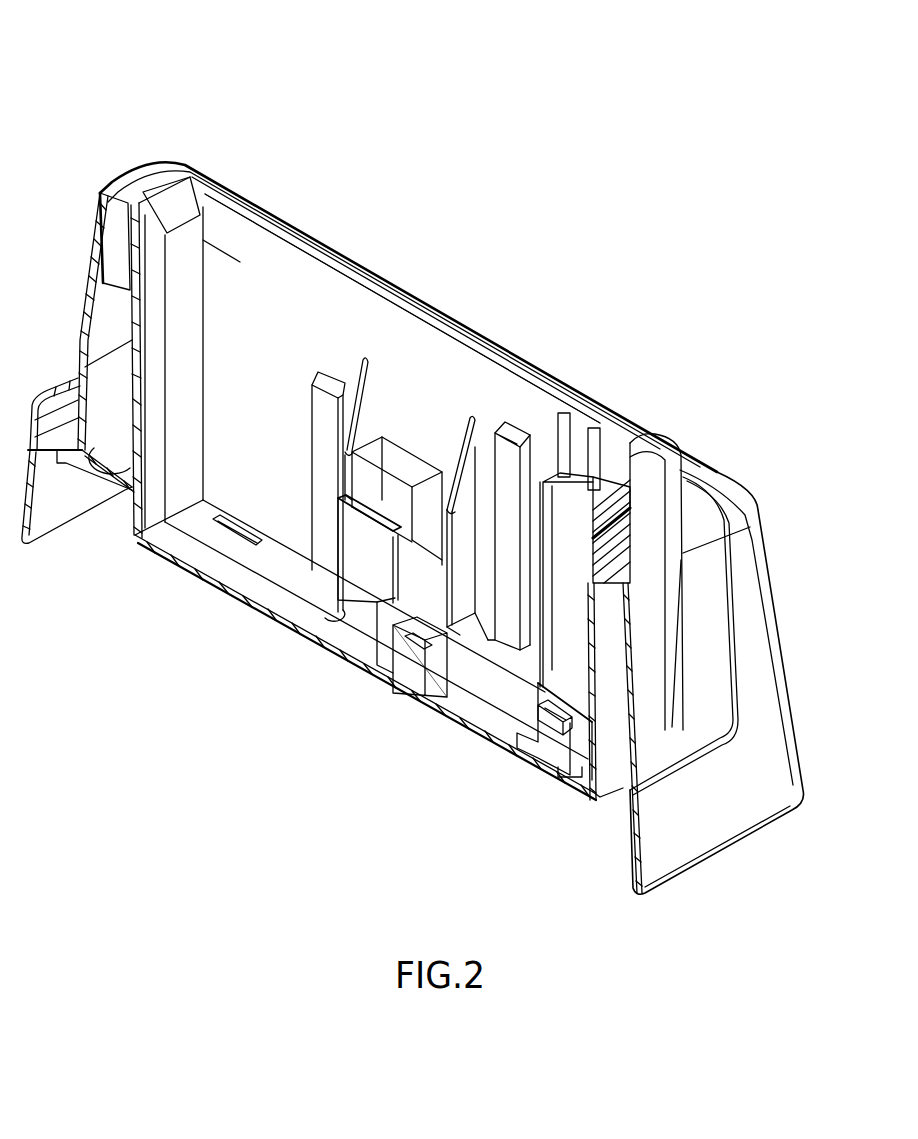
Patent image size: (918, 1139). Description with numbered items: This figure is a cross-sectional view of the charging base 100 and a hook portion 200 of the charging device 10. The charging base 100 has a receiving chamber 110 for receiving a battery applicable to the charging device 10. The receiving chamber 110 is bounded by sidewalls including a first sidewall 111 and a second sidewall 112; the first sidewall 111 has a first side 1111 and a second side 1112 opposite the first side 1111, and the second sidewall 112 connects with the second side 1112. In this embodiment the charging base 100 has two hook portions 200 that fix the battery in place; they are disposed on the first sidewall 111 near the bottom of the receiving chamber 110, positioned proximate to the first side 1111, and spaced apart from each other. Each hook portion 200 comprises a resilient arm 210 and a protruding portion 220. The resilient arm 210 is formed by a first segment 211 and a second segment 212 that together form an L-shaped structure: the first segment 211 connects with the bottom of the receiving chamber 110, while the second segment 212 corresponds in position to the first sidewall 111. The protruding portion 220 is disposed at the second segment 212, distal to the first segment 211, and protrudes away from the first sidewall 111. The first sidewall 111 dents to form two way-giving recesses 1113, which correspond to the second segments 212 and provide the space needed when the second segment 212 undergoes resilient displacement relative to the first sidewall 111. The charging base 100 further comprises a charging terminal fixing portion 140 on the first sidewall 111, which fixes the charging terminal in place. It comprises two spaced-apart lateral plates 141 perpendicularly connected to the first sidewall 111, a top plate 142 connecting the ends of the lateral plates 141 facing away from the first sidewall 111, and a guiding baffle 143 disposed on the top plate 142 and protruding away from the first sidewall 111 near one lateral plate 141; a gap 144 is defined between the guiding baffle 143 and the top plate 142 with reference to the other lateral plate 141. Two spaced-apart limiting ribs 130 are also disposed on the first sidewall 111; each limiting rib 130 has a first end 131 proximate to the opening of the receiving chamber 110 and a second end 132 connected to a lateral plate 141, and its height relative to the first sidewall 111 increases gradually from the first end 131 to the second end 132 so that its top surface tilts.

The charging device 10 is at (711, 440).
The charging base 100 is at (135, 185).
The receiving chamber 110 is at (389, 354).
The first sidewall 111 is at (315, 295).
The second sidewall 112 is at (195, 275).
The first side 1111 is at (628, 443).
The second side 1112 is at (200, 205).
The way-giving recess 1113 is at (408, 610).
The limiting rib 130 is at (345, 405).
The first end 131 is at (363, 358).
The second end 132 is at (345, 445).
The charging terminal fixing portion 140 is at (447, 522).
The lateral plate 141 is at (345, 468).
The top plate 142 is at (410, 560).
The guiding baffle 143 is at (348, 493).
The gap 144 is at (355, 535).
The hook portion 200 is at (548, 737).
The resilient arm 210 is at (437, 770).
The first segment 211 is at (400, 673).
The second segment 212 is at (419, 662).
The protruding portion 220 is at (538, 712).